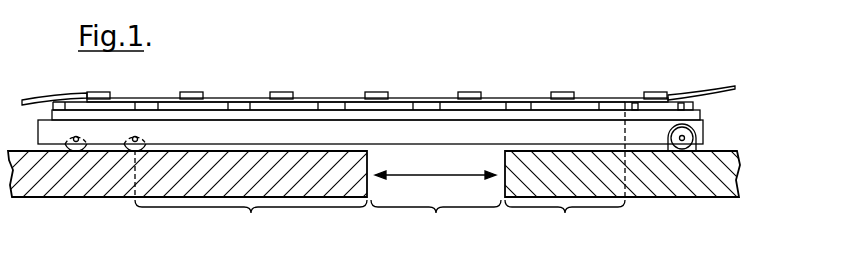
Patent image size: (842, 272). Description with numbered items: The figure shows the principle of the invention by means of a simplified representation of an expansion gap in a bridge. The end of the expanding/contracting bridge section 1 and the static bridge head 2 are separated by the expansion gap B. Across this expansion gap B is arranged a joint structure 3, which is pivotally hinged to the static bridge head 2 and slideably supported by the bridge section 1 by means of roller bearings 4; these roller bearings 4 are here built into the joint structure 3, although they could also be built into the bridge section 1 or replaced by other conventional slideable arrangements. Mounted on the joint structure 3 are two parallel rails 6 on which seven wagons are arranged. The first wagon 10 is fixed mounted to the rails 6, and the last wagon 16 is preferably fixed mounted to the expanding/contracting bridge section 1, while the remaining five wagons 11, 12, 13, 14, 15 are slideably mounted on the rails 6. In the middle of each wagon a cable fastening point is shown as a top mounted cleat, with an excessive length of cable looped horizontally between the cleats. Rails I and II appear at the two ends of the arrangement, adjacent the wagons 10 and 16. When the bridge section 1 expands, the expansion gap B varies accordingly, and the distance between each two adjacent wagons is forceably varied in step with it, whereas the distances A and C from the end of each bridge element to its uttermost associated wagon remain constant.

The expanding/contracting bridge section 1 is at (118, 186).
The static bridge head 2 is at (692, 183).
The joint structure 3 is at (452, 139).
The roller bearings 4 is at (130, 130).
The parallel rails 6 is at (50, 115).
The first wagon 10 is at (675, 95).
The wagon 11 is at (542, 97).
The wagon 12 is at (449, 102).
The wagon 13 is at (353, 103).
The wagon 14 is at (265, 102).
The wagon 15 is at (171, 104).
The last wagon 16 is at (78, 103).
The outlet rail I is at (698, 93).
The inlet rail II is at (42, 97).
The distance A is at (251, 222).
The expansion gap B is at (436, 221).
The distance C is at (565, 221).